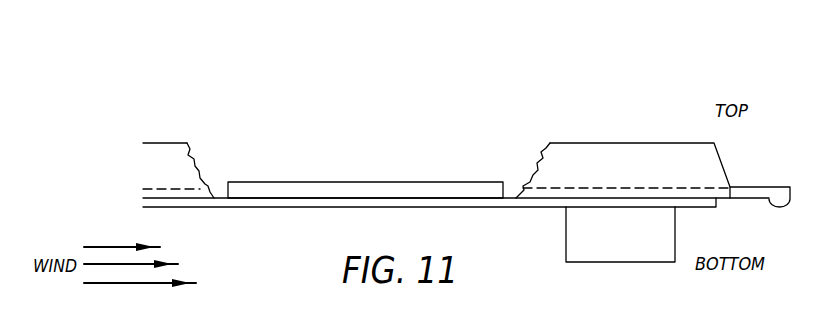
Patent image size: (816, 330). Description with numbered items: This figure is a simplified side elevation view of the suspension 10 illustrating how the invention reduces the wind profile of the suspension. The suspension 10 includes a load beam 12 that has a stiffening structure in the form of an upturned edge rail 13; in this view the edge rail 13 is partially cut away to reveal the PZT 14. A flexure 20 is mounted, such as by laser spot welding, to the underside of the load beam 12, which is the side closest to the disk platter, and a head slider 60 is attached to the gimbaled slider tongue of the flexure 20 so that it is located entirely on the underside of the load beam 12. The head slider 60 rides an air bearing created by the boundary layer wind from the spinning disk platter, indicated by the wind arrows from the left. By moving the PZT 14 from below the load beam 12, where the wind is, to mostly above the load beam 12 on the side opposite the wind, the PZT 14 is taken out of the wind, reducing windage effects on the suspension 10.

The suspension 10 is at (660, 102).
The load beam 12 is at (163, 167).
The edge rail 13 is at (163, 143).
The PZT 14 is at (364, 181).
The flexure 20 is at (153, 203).
The head slider 60 is at (620, 262).